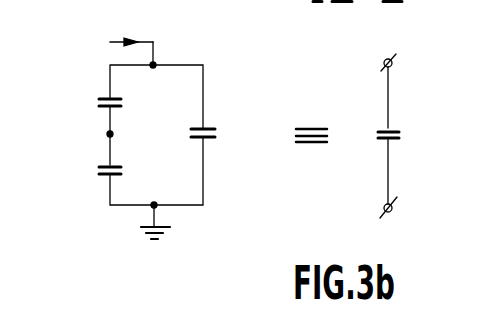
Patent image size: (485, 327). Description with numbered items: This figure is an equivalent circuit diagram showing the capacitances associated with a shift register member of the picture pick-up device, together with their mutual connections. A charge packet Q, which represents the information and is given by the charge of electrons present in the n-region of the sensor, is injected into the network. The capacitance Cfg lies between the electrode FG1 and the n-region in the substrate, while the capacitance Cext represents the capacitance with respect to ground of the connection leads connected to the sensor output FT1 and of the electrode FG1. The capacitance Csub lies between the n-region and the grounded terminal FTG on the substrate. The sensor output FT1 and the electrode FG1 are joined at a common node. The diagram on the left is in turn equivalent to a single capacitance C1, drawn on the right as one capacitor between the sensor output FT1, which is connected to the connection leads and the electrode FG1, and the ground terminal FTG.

The charge packet Q is at (129, 39).
The capacitance between electrode FG1 and the n-region Cfg is at (99, 103).
The sensor output FT1 is at (107, 134).
The electrode FG1 is at (113, 134).
The external capacitance Cext is at (99, 171).
The substrate capacitance Csub is at (216, 134).
The grounded terminal FTG is at (158, 208).
The equivalent capacitance C1 is at (400, 137).